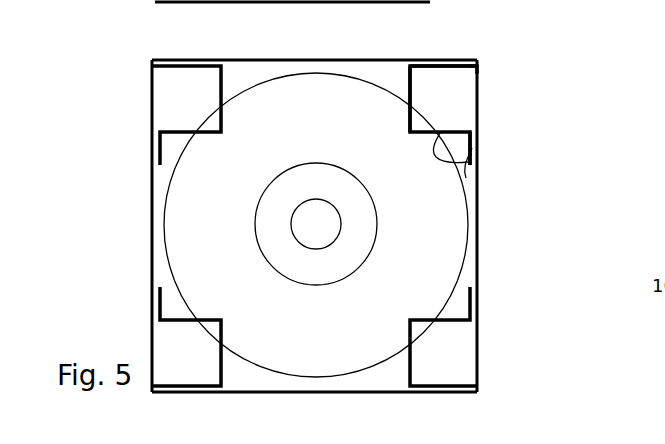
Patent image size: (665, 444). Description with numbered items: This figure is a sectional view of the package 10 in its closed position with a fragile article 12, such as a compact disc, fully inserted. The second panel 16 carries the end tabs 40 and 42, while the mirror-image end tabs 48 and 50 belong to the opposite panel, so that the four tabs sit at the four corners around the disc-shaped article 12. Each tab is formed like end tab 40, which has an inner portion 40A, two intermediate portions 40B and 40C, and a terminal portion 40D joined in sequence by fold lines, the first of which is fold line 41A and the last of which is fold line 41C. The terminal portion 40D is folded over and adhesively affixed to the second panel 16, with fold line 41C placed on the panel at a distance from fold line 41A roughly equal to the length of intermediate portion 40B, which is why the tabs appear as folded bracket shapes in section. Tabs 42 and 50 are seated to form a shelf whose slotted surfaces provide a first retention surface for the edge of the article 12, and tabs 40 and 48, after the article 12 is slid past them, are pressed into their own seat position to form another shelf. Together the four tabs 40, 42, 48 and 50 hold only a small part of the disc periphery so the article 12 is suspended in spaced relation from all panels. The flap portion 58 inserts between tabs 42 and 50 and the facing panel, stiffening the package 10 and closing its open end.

The package 10 is at (545, 349).
The fragile article 12 is at (197, 196).
The second panel 16 is at (478, 208).
The end tab 40 is at (408, 70).
The inner portion 40A is at (455, 60).
The intermediate portion 40B is at (412, 100).
The intermediate portion 40C is at (468, 162).
The terminal portion 40D is at (452, 170).
The fold line 41A is at (477, 65).
The fold line 41C is at (478, 128).
The end tab 42 is at (436, 320).
The end tab 48 is at (222, 87).
The end tab 50 is at (188, 318).
The end flap portion 58 is at (282, 387).